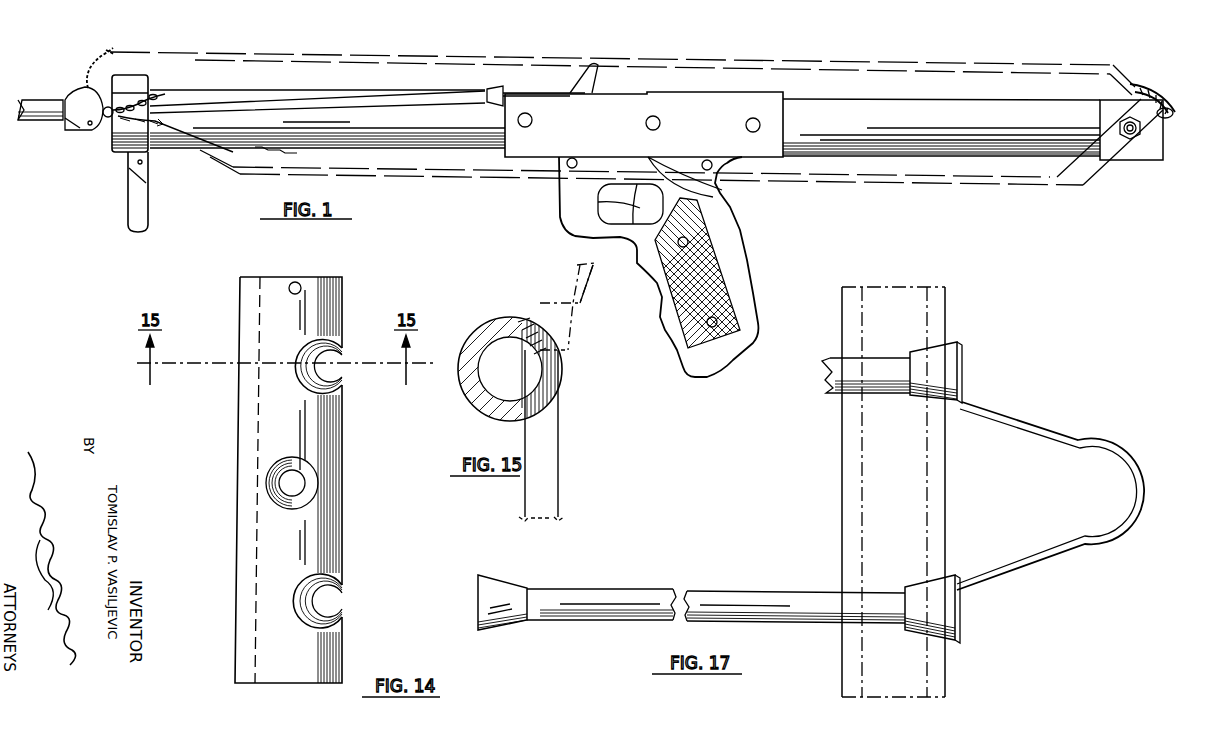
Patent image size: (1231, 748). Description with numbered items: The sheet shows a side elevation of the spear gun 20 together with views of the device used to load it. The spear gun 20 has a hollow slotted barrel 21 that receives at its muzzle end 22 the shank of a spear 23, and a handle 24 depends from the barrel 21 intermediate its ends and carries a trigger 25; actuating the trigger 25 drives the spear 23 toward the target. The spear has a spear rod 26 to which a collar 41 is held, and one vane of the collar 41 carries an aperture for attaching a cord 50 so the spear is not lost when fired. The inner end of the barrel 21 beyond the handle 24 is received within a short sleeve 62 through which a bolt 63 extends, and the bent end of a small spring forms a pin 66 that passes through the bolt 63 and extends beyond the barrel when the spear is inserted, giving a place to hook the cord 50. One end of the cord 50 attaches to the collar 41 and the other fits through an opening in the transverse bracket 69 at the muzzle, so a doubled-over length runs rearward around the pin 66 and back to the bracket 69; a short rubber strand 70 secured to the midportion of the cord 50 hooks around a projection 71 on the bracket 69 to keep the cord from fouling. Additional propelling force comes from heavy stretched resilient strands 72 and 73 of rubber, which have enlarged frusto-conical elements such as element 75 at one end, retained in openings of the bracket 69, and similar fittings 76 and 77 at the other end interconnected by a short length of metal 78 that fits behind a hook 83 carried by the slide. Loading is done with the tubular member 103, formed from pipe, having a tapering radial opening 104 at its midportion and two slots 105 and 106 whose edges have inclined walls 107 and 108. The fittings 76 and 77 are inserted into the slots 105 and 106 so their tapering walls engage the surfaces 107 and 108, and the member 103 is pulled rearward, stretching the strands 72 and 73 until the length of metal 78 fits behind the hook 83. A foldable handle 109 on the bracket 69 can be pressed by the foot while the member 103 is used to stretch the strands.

In FIG. 1, the spear gun 20 is at (487, 44).
In FIG. 1, the barrel 21 is at (267, 90).
In FIG. 1, the muzzle end 22 is at (153, 94).
In FIG. 1, the spear 23 is at (38, 93).
In FIG. 1, the handle 24 is at (725, 252).
In FIG. 1, the trigger 25 is at (610, 202).
In FIG. 1, the spear rod 26 is at (52, 114).
In FIG. 1, the collar 41 is at (78, 112).
In FIG. 1, the cord 50 is at (372, 57).
In FIG. 1, the sleeve 62 is at (1148, 148).
In FIG. 1, the bolt 63 is at (1118, 125).
In FIG. 1, the pin 66 is at (1173, 115).
In FIG. 1, the transverse bracket 69 is at (125, 80).
In FIG. 1, the rubber strand 70 is at (155, 98).
In FIG. 1, the projection 71 is at (105, 119).
In FIG. 15, the resilient strand 72 is at (547, 490).
In FIG. 17, the resilient strand 72 is at (833, 362).
In FIG. 1, the resilient strand 73 is at (385, 102).
In FIG. 17, the resilient strand 73 is at (605, 595).
In FIG. 17, the frusto-conical element 75 is at (493, 590).
In FIG. 15, the fitting 76 is at (568, 315).
In FIG. 17, the fitting 76 is at (948, 371).
In FIG. 1, the fitting 77 is at (497, 92).
In FIG. 17, the fitting 77 is at (948, 613).
In FIG. 1, the length of metal 78 is at (553, 95).
In FIG. 17, the length of metal 78 is at (1118, 530).
In FIG. 1, the hook 83 is at (600, 74).
In FIG. 14, the member 103 is at (236, 322).
In FIG. 15, the member 103 is at (495, 323).
In FIG. 17, the member 103 is at (950, 313).
In FIG. 14, the tapering radial opening 104 is at (267, 490).
In FIG. 14, the slot 105 is at (331, 358).
In FIG. 15, the slot 105 is at (543, 395).
In FIG. 14, the slot 106 is at (328, 597).
In FIG. 14, the inclined wall 107 is at (327, 383).
In FIG. 15, the inclined wall 107 is at (522, 322).
In FIG. 14, the inclined wall 108 is at (325, 618).
In FIG. 1, the foldable handle 109 is at (135, 184).